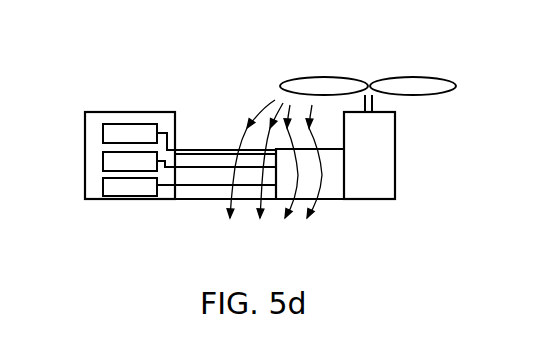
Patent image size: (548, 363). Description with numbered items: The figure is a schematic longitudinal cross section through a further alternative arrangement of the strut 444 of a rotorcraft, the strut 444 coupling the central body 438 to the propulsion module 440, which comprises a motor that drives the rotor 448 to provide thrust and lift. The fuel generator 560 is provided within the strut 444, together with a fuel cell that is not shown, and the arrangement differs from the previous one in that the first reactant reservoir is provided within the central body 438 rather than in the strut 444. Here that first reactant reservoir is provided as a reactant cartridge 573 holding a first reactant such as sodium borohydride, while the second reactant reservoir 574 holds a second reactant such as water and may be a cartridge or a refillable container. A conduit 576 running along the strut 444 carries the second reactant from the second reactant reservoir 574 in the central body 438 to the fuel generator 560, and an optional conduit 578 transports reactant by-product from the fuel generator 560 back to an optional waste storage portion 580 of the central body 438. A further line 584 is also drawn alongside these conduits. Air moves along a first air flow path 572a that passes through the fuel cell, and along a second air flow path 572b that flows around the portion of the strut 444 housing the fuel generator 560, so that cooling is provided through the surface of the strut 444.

The central body 438 is at (147, 111).
The second reactant reservoir 574 is at (102, 133).
The waste storage portion 580 is at (102, 161).
The reactant cartridge 573 is at (114, 198).
The conduit 576 is at (192, 148).
The conduit 578 is at (228, 166).
The third heat pipe 584 is at (222, 186).
The strut 444 is at (190, 200).
The fuel generator 560 is at (338, 173).
The propulsion module 440 is at (395, 131).
The rotor 448 is at (448, 59).
The first air flow path 572a is at (268, 96).
The second air flow path 572b is at (318, 221).